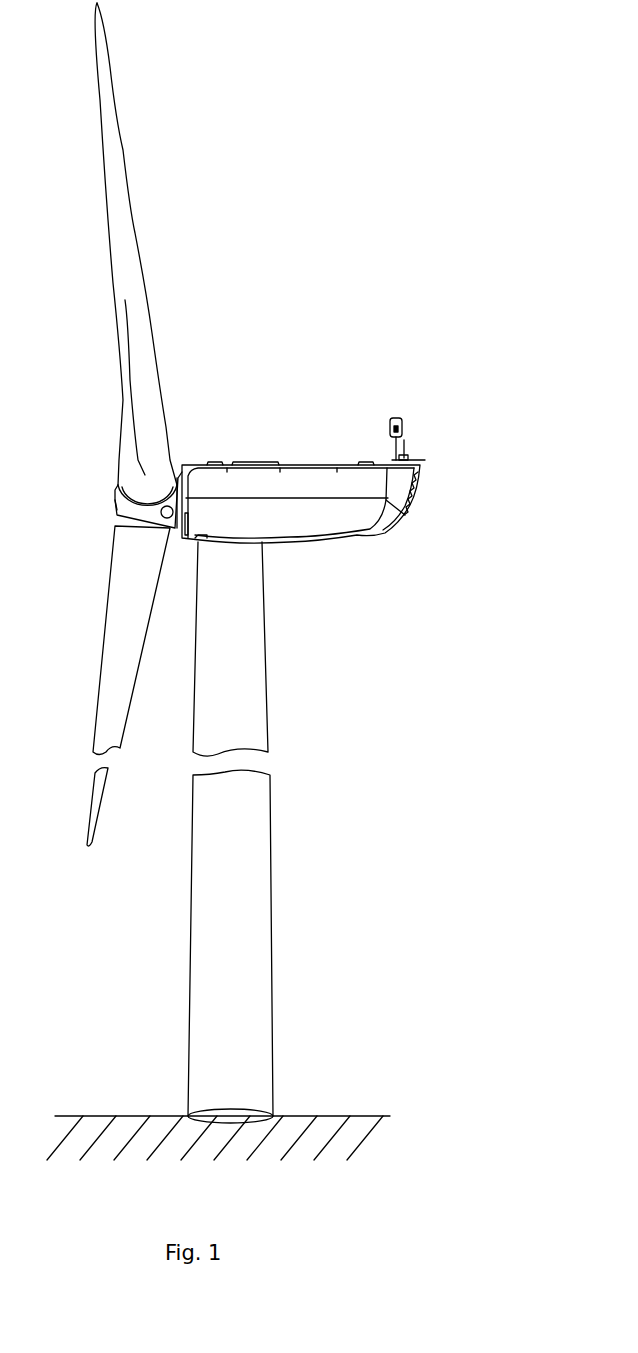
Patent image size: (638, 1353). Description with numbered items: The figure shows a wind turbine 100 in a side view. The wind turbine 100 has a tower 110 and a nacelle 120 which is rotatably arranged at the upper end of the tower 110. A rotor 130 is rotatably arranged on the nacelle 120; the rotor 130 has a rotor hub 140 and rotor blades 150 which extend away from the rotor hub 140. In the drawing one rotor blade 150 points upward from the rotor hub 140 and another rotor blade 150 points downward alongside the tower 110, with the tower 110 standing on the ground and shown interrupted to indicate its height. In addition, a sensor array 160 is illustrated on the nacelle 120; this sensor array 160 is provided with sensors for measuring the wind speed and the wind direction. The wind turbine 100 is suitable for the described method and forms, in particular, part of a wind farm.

The wind turbine 100 is at (240, 335).
The tower 110 is at (252, 810).
The nacelle 120 is at (306, 490).
The rotor 130 is at (93, 608).
The rotor hub 140 is at (113, 508).
The rotor blades 150 is at (115, 665).
The sensor array 160 is at (398, 417).